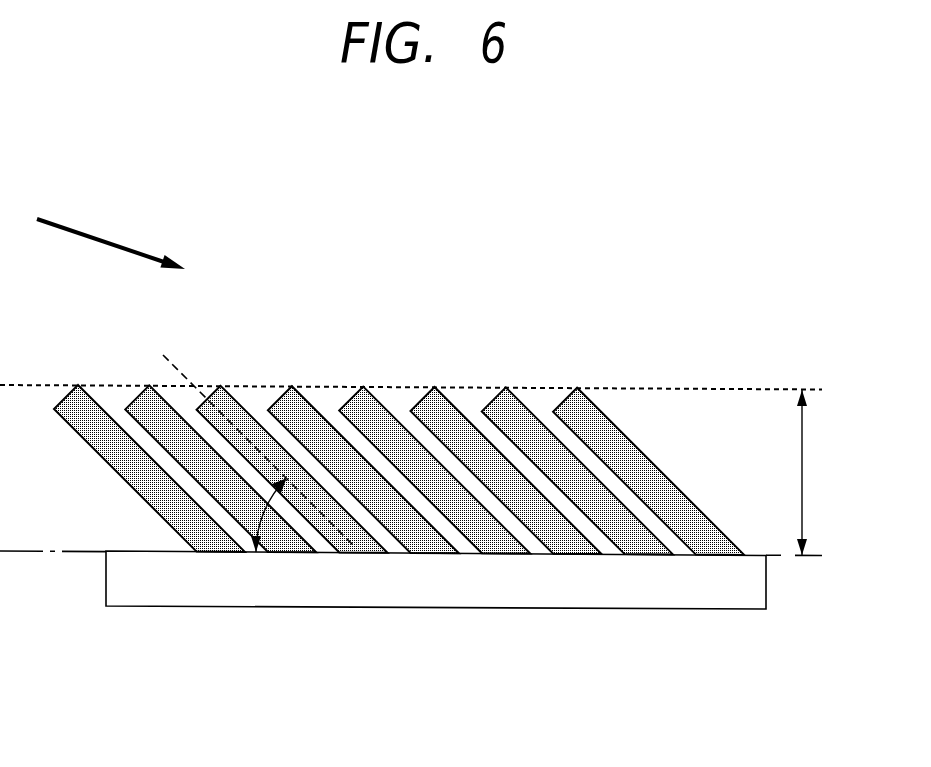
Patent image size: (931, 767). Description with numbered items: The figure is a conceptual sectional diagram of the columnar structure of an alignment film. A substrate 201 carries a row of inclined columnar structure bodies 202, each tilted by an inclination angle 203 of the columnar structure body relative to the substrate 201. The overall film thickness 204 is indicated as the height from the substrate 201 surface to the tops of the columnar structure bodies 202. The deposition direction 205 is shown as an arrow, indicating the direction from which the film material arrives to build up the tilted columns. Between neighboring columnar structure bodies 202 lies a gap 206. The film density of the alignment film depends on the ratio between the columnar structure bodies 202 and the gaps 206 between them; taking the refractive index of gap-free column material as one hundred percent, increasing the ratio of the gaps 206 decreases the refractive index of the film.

The substrate 201 is at (547, 585).
The columnar structure body 202 is at (587, 407).
The inclination angle of the columnar structure body 203 is at (263, 515).
The film thickness 204 is at (802, 471).
The deposition direction 205 is at (102, 238).
The gap 206 is at (403, 410).